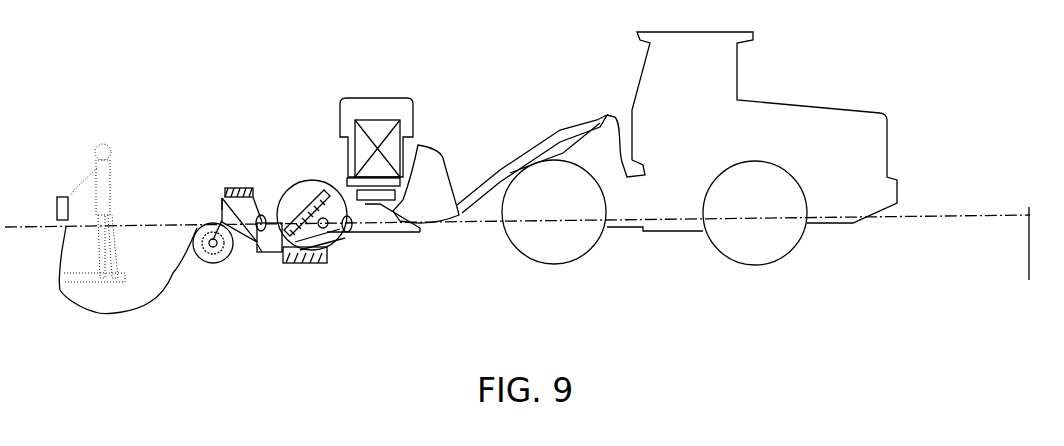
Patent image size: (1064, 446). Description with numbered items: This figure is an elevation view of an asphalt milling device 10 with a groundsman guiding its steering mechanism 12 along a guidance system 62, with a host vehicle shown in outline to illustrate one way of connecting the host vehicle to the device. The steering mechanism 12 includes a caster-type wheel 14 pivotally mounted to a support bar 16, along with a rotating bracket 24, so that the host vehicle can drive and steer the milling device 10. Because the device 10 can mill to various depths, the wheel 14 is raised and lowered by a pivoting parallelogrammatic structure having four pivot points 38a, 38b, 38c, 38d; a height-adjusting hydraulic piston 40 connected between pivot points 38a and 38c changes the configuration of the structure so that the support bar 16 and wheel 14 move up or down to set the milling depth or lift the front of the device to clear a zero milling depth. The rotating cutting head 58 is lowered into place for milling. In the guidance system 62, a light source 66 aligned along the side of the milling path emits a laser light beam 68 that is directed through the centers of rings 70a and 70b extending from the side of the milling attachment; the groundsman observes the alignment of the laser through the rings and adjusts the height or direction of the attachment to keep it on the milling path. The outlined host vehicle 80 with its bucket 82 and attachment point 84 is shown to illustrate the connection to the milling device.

The asphalt milling device 10 is at (389, 84).
The steering mechanism 12 is at (238, 172).
The wheel 14 is at (228, 257).
The support bar 16 is at (222, 196).
The rotating bracket 24 is at (245, 190).
The pivot point 38a is at (323, 182).
The pivot point 38b is at (335, 238).
The pivot point 38c is at (285, 250).
The pivot point 38d is at (277, 228).
The height-adjusting hydraulic piston 40 is at (310, 253).
The rotating cutting head 58 is at (330, 246).
The guidance system 62 is at (62, 186).
The light source 66 is at (1026, 236).
The light beam 68 is at (940, 213).
The ring 70a is at (335, 233).
The ring 70b is at (257, 244).
The wheel loader 80 is at (626, 73).
The bucket 82 is at (445, 153).
The attachment point 84 is at (218, 182).